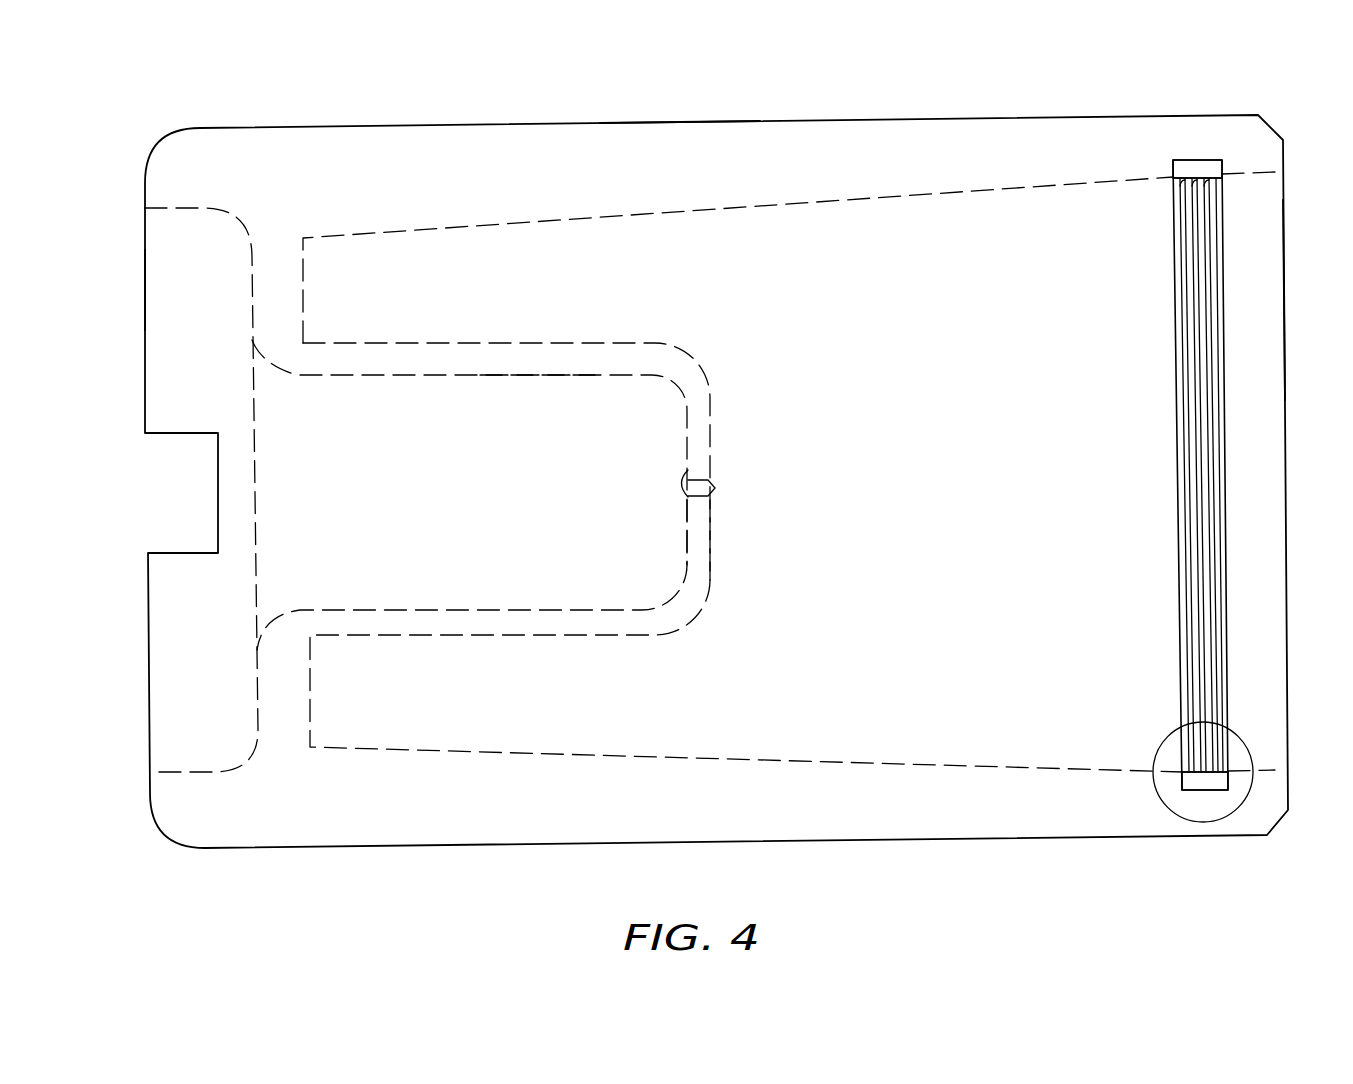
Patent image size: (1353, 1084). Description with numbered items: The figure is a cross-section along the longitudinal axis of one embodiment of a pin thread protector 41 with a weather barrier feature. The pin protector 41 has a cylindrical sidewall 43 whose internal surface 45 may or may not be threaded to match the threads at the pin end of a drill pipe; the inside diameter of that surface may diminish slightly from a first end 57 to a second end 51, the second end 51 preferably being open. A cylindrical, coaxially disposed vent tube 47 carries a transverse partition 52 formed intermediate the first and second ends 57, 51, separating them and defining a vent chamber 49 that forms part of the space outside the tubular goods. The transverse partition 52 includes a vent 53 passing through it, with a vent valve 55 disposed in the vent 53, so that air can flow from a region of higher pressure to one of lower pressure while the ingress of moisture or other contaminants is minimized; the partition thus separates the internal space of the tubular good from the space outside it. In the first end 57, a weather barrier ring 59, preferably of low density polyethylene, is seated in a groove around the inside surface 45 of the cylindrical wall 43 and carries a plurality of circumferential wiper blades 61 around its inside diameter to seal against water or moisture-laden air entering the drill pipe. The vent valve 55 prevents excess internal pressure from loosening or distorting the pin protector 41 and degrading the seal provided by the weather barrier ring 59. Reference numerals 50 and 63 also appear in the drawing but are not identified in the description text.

The pin thread protector 41 is at (447, 126).
The cylindrical sidewall 43 is at (655, 153).
The internal surface 45 is at (762, 205).
The vent tube 47 is at (497, 342).
The vent chamber 49 is at (453, 506).
The channel inner wall 50 is at (540, 378).
The second end 51 is at (136, 292).
The transverse partition 52 is at (700, 550).
The vent 53 is at (705, 478).
The vent valve 55 is at (680, 483).
The first end 57 is at (1264, 228).
The weather barrier ring 59 is at (1188, 337).
The circumferential wiper blades 61 is at (1180, 208).
The connector lower end 63 is at (1165, 742).